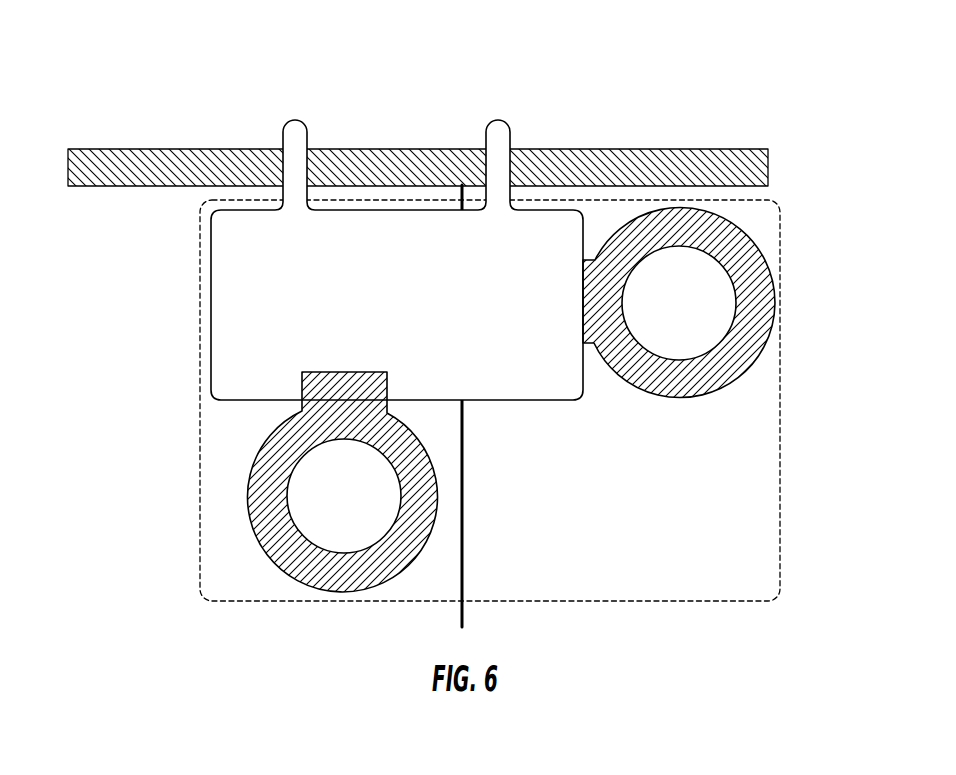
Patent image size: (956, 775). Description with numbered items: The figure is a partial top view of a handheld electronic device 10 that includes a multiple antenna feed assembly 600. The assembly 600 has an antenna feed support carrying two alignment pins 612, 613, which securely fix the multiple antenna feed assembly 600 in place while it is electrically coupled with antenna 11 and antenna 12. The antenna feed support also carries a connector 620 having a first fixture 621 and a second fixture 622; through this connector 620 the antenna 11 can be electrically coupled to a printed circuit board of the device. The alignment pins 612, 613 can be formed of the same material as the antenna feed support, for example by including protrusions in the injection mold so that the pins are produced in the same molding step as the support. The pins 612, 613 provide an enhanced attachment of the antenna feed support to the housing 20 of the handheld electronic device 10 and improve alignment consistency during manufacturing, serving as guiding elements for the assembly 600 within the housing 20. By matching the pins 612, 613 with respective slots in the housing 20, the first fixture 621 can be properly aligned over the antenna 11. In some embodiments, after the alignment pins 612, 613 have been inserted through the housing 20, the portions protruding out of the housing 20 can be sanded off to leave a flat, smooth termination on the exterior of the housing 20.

The handheld electronic device 10 is at (138, 70).
The housing 20 is at (658, 149).
The multiple antenna feed assembly 600 is at (200, 417).
The alignment pin 612 is at (397, 232).
The alignment pin 613 is at (497, 120).
The connector 620 is at (511, 400).
The first fixture 621 is at (684, 242).
The second fixture 622 is at (359, 430).
The antenna 12 is at (158, 622).
The antenna 11 is at (780, 643).